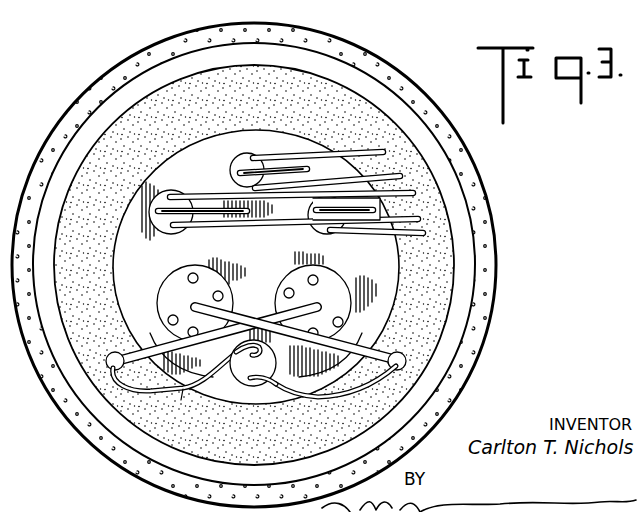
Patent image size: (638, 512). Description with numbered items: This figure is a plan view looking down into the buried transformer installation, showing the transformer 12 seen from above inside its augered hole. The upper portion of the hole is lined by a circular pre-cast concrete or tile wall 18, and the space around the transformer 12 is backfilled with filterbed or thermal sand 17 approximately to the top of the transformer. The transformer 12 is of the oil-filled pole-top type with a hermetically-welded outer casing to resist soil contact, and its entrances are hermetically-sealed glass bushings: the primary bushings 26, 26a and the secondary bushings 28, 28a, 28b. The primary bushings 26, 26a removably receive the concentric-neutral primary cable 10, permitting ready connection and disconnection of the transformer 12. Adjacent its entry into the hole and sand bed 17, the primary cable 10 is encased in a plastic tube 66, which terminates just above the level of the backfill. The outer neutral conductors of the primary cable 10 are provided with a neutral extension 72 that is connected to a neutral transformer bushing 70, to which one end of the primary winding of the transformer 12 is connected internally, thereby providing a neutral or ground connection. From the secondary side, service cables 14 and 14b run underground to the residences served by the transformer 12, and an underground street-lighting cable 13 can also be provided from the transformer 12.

The primary cable 10 is at (132, 339).
The transformer 12 is at (121, 284).
The street-lighting cable 13 is at (298, 187).
The service cable 14 is at (312, 149).
The rod 14b is at (407, 246).
The thermal sand 17 is at (270, 104).
The circular concrete or tile wall 18 is at (481, 192).
The primary bushing 26 is at (180, 268).
The primary bushing 26a is at (349, 289).
The secondary bushing 28 is at (248, 150).
The secondary bushing 28a is at (179, 191).
The secondary bushing 28b is at (326, 241).
The plastic tube 66 is at (119, 376).
The neutral transformer bushing 70 is at (247, 381).
The neutral extension 72 is at (183, 390).